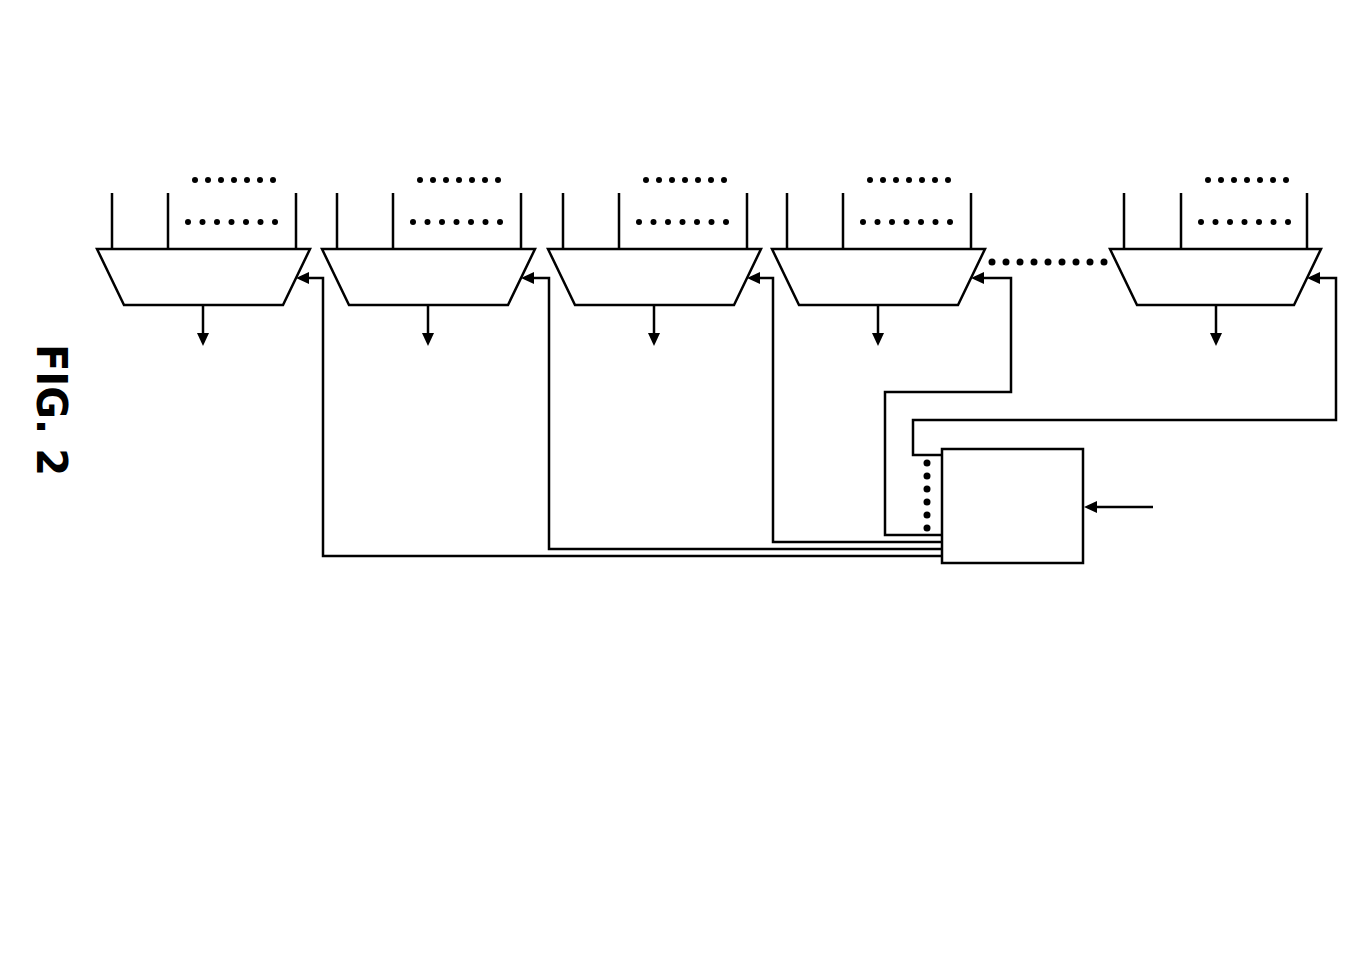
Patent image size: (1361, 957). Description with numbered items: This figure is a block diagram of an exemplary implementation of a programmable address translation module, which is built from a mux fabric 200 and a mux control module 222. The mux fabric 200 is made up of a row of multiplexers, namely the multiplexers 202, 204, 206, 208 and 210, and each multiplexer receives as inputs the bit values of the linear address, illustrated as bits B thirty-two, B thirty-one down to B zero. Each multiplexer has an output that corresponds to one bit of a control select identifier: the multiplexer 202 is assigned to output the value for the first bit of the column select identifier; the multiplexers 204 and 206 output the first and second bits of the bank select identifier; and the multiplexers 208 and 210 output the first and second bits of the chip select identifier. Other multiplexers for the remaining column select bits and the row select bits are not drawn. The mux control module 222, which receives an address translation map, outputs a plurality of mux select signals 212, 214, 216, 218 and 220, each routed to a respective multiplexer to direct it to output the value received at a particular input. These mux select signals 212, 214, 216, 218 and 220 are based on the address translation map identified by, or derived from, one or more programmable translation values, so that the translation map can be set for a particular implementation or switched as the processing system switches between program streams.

The mux fabric 200 is at (431, 78).
The multiplexer 202 is at (1196, 293).
The multiplexer 204 is at (858, 293).
The multiplexer 206 is at (634, 293).
The multiplexer 208 is at (408, 293).
The multiplexer 210 is at (183, 293).
The mux select signal 212 is at (1336, 364).
The mux select signal 214 is at (1011, 378).
The mux select signal 216 is at (773, 450).
The mux select signal 218 is at (549, 480).
The mux select signal 220 is at (323, 508).
The mux control module 222 is at (992, 561).